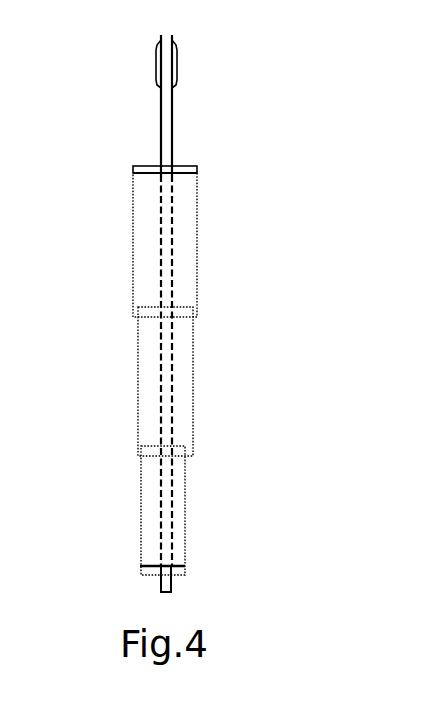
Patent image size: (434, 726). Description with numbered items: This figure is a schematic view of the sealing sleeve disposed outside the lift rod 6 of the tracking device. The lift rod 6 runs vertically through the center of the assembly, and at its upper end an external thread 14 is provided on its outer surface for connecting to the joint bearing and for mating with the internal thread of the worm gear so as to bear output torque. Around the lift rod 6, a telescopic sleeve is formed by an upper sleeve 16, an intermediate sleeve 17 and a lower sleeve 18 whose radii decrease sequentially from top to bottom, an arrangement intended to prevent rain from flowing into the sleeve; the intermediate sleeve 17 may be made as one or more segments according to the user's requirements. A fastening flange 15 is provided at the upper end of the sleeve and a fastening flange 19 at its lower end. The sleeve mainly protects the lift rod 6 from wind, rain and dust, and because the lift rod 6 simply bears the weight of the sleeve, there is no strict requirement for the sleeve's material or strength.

The lift rod 6 is at (162, 187).
The external thread 14 is at (177, 70).
The fastening flange at the upper end of the sleeve 15 is at (197, 168).
The upper sleeve 16 is at (185, 236).
The intermediate sleeve 17 is at (149, 375).
The lower sleeve 18 is at (175, 519).
The fastening flange at the lower end of the sleeve 19 is at (150, 567).